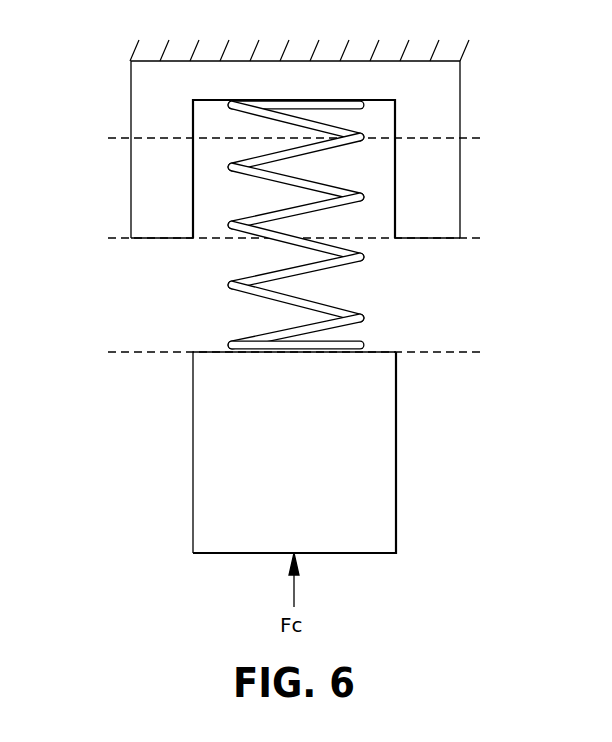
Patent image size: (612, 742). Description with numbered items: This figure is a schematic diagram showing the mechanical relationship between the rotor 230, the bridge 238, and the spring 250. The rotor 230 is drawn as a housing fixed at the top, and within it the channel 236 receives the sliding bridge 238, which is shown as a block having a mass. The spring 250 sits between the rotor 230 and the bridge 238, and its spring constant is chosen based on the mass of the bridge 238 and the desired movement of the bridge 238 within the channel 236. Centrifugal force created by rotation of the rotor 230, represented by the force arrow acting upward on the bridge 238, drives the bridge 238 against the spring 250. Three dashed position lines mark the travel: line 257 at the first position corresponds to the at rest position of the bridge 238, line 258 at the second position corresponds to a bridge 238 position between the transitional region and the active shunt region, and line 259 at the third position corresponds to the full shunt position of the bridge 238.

The rotor 230 is at (131, 100).
The channel 236 is at (193, 202).
The bridge 238 is at (396, 483).
The spring 250 is at (232, 286).
The line at X1 257 is at (432, 358).
The line at X2 258 is at (368, 242).
The line at X3 259 is at (427, 140).